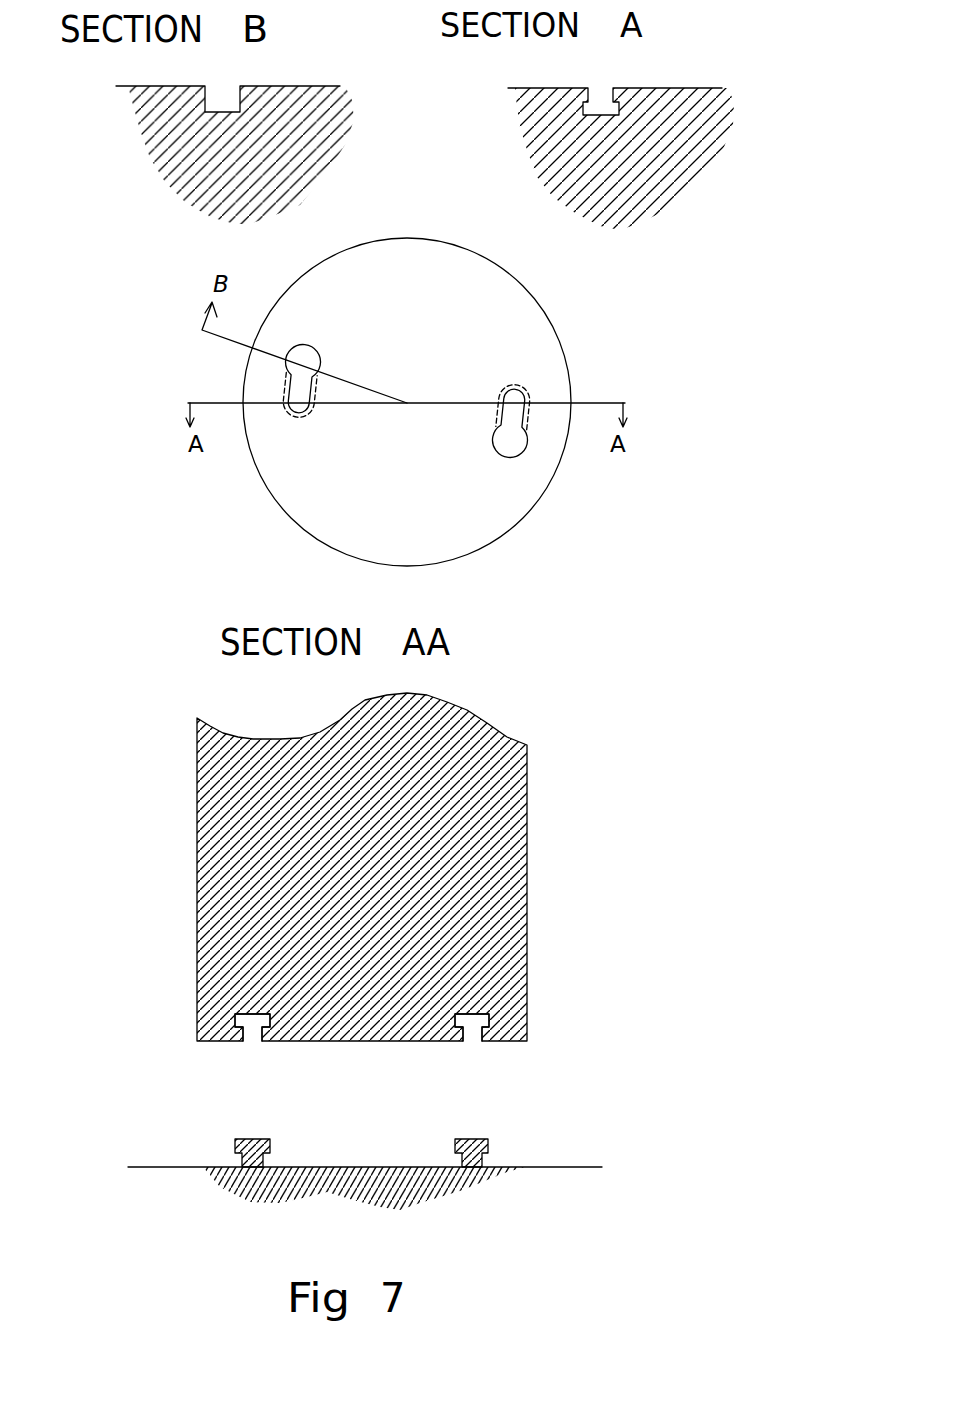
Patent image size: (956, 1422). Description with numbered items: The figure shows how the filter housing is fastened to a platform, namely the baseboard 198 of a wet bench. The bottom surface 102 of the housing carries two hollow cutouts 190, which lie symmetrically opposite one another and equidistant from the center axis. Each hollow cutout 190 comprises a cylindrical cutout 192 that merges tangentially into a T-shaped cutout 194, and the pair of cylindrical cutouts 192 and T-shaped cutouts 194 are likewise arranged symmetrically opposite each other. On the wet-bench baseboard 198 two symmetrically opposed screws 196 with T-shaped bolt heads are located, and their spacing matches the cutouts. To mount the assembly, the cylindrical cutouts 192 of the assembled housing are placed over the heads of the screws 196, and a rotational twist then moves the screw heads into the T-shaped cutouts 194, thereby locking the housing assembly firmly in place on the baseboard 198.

The bottom surface 102 is at (389, 1042).
The hollow cutout 190 is at (250, 1030).
The cylindrical cutout 192 is at (311, 352).
The T-shaped cutout 194 is at (292, 418).
The screw 196 is at (477, 1140).
The wet-bench baseboard 198 is at (378, 1234).